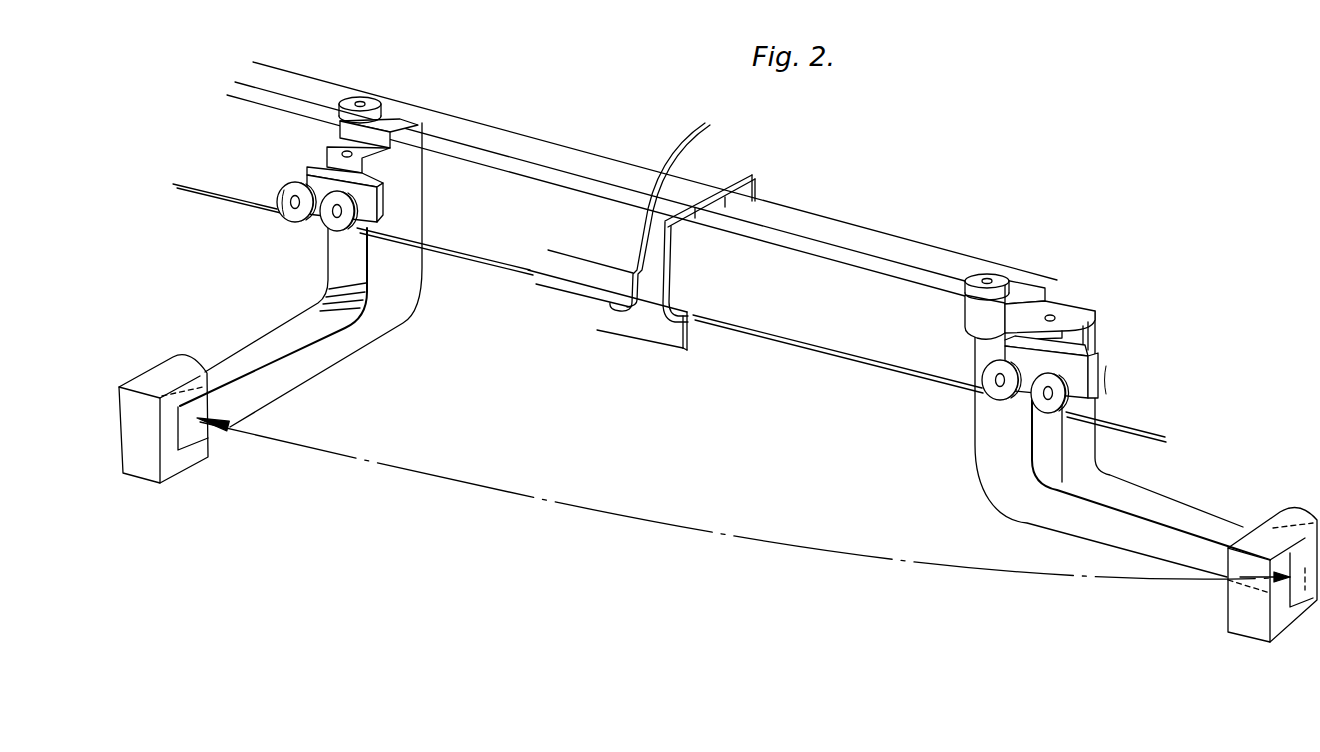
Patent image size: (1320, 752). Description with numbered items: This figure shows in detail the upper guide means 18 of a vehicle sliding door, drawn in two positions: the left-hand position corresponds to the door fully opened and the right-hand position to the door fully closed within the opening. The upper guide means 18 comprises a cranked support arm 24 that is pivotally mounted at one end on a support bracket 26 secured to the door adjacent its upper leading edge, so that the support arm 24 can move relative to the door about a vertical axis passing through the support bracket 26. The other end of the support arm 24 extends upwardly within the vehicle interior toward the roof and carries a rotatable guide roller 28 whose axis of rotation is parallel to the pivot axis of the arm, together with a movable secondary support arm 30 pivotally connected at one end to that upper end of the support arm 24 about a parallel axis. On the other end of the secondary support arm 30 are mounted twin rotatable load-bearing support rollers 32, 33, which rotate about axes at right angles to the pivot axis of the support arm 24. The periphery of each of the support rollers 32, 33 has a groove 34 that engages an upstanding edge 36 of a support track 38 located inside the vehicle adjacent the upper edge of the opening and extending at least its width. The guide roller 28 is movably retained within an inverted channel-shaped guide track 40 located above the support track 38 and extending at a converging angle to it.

The upper guide means 18 is at (346, 377).
The cranked support arm 24 is at (350, 340).
The support bracket 26 is at (147, 463).
The rotatable guide roller 28 is at (373, 100).
The secondary support arm 30 is at (330, 167).
The load-bearing support roller 32 is at (300, 217).
The load-bearing support roller 33 is at (330, 220).
The groove 34 is at (298, 178).
The upstanding edge 36 is at (453, 253).
The support track 38 is at (670, 337).
The guide track 40 is at (535, 147).